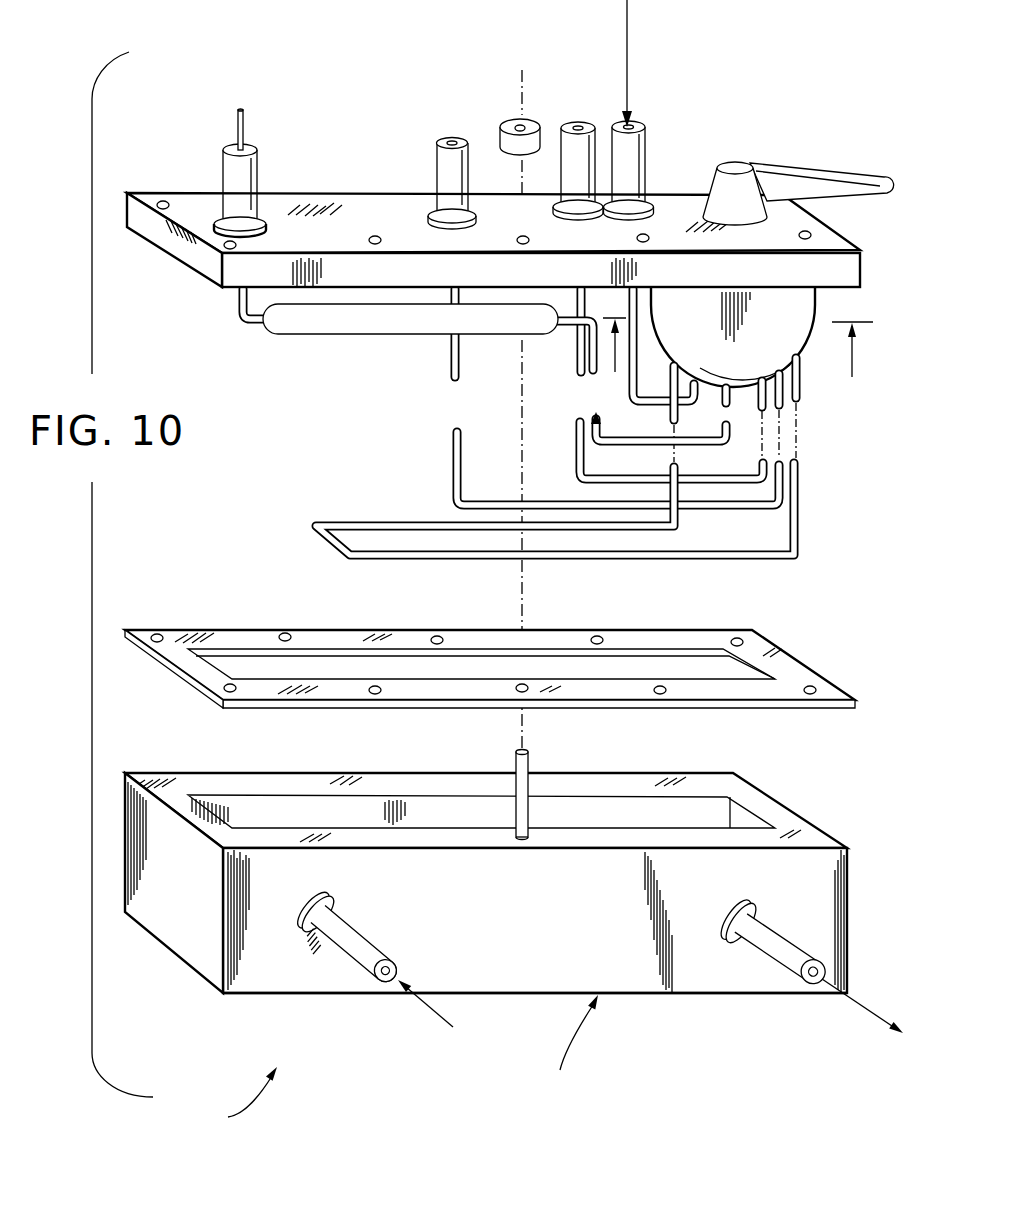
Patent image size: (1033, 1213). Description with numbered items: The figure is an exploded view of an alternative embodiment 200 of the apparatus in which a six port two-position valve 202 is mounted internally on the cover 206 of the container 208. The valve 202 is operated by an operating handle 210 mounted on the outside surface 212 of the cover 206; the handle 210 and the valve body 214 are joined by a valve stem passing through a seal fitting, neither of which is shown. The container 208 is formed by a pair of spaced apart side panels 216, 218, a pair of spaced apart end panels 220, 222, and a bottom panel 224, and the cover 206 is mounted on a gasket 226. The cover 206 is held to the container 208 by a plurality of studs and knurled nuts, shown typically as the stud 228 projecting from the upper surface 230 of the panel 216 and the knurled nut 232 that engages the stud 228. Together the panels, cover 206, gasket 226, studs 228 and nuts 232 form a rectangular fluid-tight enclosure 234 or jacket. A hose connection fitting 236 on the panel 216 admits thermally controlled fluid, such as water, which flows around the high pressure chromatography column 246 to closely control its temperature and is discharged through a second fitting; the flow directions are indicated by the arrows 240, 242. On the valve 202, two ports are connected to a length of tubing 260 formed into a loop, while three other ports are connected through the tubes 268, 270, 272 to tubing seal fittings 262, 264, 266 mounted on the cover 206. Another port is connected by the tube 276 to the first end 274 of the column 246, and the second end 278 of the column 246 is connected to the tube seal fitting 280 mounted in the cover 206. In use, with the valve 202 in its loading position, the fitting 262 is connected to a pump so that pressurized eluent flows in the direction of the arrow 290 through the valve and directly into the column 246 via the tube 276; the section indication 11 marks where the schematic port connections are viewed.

The alternative embodiment 200 is at (227, 1098).
The six port two-position valve 202 is at (817, 302).
The cover 206 is at (860, 272).
The container 208 is at (522, 911).
The operating handle 210 is at (798, 165).
The outside surface 212 is at (838, 242).
The valve body 214 is at (805, 353).
The side panel 216 is at (688, 983).
The side panel 218 is at (655, 772).
The end panel 220 is at (793, 807).
The end panel 222 is at (185, 937).
The bottom panel 224 is at (270, 995).
The gasket 226 is at (793, 658).
The stud 228 is at (513, 762).
The upper surface 230 is at (807, 833).
The knurled nut 232 is at (528, 116).
The fluid-tight enclosure 234 is at (566, 1050).
The hose connection fitting 236 is at (367, 962).
The arrow 240 is at (453, 1027).
The arrow 242 is at (865, 1010).
The high pressure chromatography column 246 is at (362, 338).
The length of tubing 260 is at (477, 562).
The tubing seal fitting 262 is at (643, 130).
The tubing seal fitting 264 is at (437, 142).
The tubing seal fitting 266 is at (586, 127).
The tube 268 is at (658, 426).
The tube 270 is at (455, 465).
The tube 272 is at (575, 467).
The first end 274 is at (542, 338).
The tube 276 is at (568, 327).
The second end 278 is at (277, 334).
The tube seal fitting 280 is at (258, 170).
The arrow 290 is at (628, 52).
The section line for FIG. 11 is at (738, 360).